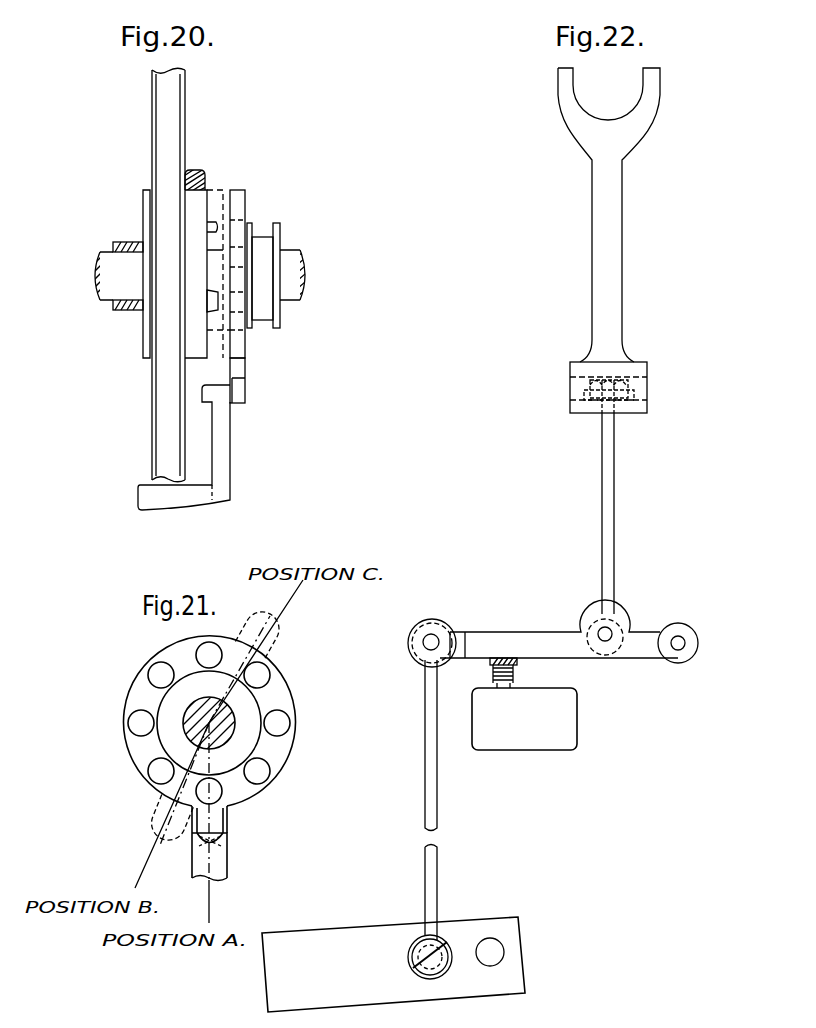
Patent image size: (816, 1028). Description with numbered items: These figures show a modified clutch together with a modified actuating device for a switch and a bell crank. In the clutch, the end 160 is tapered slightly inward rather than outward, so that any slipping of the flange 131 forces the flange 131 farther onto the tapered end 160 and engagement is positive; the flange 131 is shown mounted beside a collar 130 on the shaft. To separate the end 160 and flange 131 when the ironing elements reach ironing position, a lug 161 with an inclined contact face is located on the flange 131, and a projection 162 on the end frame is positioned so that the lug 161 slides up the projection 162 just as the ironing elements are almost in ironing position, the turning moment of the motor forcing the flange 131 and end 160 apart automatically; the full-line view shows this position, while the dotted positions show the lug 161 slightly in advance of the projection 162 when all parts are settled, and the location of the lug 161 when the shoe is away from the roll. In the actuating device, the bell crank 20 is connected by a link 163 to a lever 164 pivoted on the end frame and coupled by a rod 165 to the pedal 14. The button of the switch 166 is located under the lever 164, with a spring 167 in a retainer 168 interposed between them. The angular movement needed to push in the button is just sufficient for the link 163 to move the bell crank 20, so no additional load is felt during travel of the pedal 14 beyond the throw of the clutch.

In FIG. 22, the pedal 14 is at (335, 933).
In FIG. 22, the bell crank 20 is at (617, 256).
In FIG. 20, the collar 130 is at (262, 233).
In FIG. 20, the flange 131 is at (240, 195).
In FIG. 20, the end 160 is at (210, 300).
In FIG. 20, the lug 161 is at (243, 372).
In FIG. 21, the lug 161 is at (153, 832).
In FIG. 20, the projection 162 is at (222, 393).
In FIG. 21, the projection 162 is at (192, 845).
In FIG. 22, the link 163 is at (609, 489).
In FIG. 22, the lever 164 is at (648, 635).
In FIG. 22, the rod 165 is at (437, 789).
In FIG. 22, the switch 166 is at (566, 716).
In FIG. 22, the spring 167 is at (519, 681).
In FIG. 22, the retainer 168 is at (489, 672).